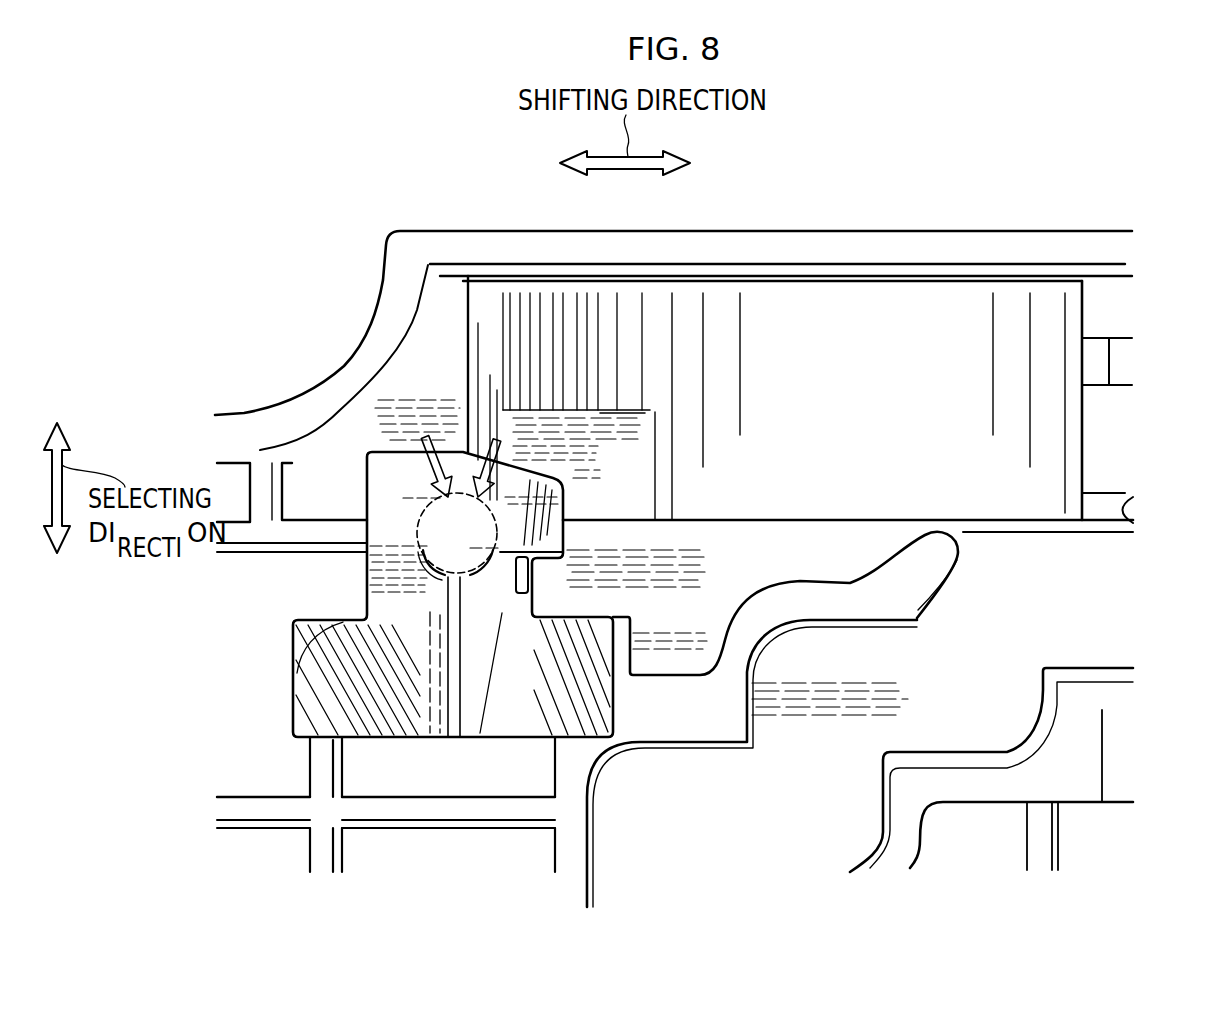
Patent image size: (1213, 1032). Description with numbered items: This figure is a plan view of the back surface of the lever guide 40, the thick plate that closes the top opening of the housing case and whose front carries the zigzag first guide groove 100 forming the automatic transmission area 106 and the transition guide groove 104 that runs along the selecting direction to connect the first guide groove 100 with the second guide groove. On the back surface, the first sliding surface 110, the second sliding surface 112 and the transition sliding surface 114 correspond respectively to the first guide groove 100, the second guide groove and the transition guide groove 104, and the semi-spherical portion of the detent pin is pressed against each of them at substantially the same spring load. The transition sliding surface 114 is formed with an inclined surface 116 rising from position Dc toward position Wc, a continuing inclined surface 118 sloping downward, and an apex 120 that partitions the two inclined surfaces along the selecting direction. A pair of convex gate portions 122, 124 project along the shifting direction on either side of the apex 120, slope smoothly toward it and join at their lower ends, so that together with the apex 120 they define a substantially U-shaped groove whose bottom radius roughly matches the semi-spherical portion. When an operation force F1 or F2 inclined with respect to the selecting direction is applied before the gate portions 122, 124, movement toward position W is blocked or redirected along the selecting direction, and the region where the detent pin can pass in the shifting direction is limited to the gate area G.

The lever guide 40 is at (903, 162).
The first guide groove 100 is at (1100, 663).
The transition guide groove 104 is at (595, 860).
The automatic transmission area 106 is at (985, 649).
The first sliding surface 110 is at (838, 414).
The second sliding surface 112 is at (453, 737).
The transition sliding surface 114 is at (531, 714).
The inclined surface 116 is at (417, 523).
The inclined surface 118 is at (477, 660).
The apex 120 is at (457, 615).
The gate portion 122 is at (490, 553).
The gate portion 124 is at (440, 567).
The operation force F1 is at (440, 457).
The operation force F2 is at (505, 465).
The gate area G is at (457, 537).